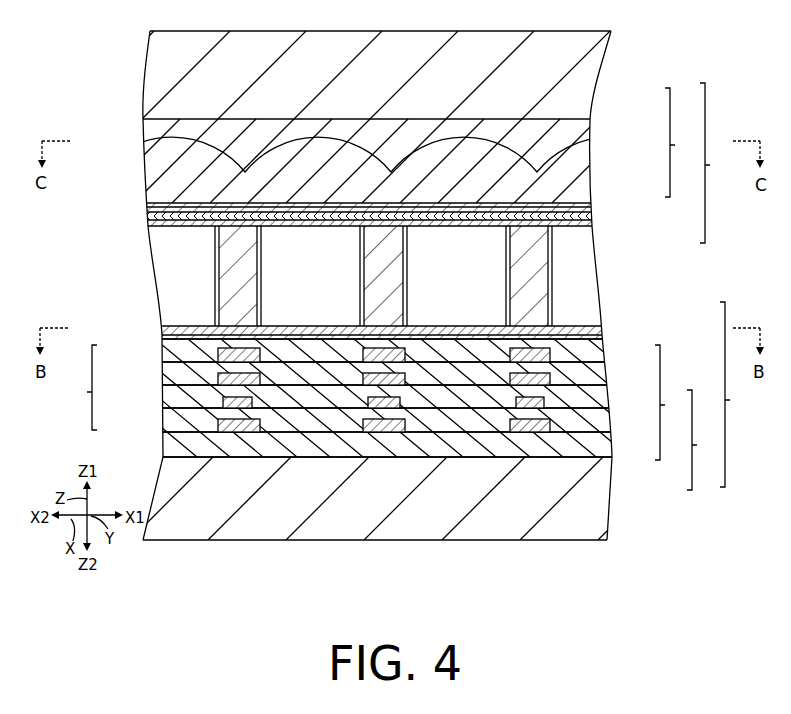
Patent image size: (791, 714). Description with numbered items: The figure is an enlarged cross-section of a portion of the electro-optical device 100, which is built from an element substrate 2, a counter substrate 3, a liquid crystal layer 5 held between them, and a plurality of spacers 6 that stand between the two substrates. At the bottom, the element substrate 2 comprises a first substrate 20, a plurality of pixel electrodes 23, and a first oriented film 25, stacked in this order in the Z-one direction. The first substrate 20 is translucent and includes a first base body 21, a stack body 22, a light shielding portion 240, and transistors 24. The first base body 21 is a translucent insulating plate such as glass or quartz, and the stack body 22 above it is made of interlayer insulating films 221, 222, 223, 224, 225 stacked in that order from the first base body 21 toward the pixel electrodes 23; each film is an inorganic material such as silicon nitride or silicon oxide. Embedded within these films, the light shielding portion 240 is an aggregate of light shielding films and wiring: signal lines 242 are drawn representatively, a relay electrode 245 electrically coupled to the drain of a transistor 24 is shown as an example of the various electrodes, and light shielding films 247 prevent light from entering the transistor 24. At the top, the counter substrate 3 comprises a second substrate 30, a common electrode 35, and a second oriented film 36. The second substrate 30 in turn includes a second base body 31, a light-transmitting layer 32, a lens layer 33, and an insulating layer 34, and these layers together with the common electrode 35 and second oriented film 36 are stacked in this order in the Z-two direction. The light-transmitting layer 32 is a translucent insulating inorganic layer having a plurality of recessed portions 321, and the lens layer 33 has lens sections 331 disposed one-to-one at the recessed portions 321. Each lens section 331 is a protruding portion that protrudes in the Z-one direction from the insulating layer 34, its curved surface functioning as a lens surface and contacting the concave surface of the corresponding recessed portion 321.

The electro-optical device 100 is at (669, 34).
The element substrate 2 is at (381, 437).
The counter substrate 3 is at (374, 123).
The liquid crystal layer 5 is at (578, 291).
The spacer 6 is at (212, 257).
The first substrate 20 is at (381, 460).
The first base body 21 is at (598, 482).
The stack body 22 is at (381, 460).
The pixel electrode 23 is at (596, 334).
The transistor 24 is at (252, 410).
The first oriented film 25 is at (596, 327).
The second substrate 30 is at (361, 107).
The second base body 31 is at (591, 100).
The light-transmitting layer 32 is at (591, 124).
The lens layer 33 is at (591, 181).
The insulating layer 34 is at (591, 204).
The common electrode 35 is at (591, 213).
The second oriented film 36 is at (591, 222).
The interlayer insulating film 221 is at (600, 445).
The interlayer insulating film 222 is at (600, 421).
The interlayer insulating film 223 is at (600, 399).
The interlayer insulating film 224 is at (600, 375).
The interlayer insulating film 225 is at (600, 351).
The light shielding portion 240 is at (303, 387).
The signal line 242 is at (218, 379).
The relay electrode 245 is at (218, 355).
The light shielding film 247 is at (218, 425).
The recessed portion 321 is at (381, 133).
The lens section 331 is at (316, 162).